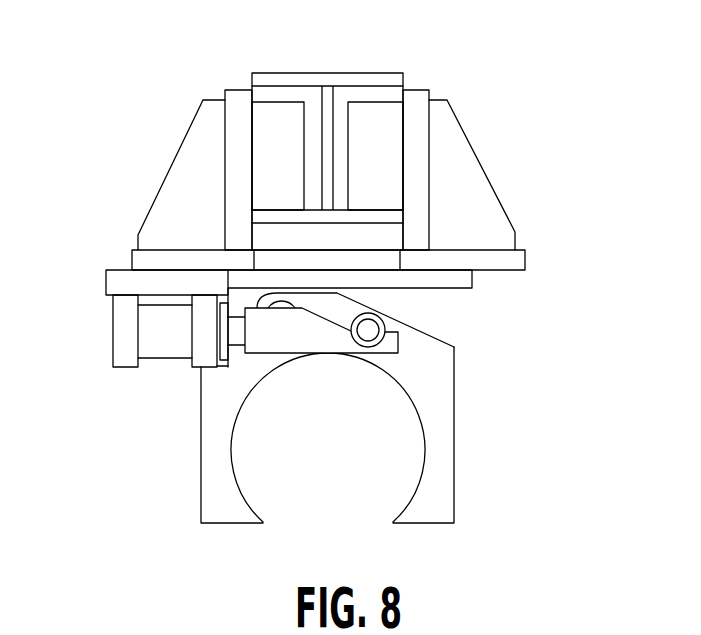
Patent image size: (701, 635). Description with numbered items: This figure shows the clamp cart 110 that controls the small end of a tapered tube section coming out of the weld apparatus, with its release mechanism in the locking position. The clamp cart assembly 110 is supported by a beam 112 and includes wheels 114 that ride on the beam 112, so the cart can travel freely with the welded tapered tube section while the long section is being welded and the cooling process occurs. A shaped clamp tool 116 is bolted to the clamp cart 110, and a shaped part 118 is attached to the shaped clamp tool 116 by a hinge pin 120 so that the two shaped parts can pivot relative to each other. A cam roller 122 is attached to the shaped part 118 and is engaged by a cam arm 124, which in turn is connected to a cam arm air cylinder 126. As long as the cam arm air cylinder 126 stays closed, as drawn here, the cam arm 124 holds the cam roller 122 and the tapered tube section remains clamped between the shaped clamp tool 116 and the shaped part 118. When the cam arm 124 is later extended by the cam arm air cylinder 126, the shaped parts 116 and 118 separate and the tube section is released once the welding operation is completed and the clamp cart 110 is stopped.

The clamp cart 110 is at (518, 125).
The beam 112 is at (357, 80).
The wheels 114 is at (270, 120).
The shaped clamp tool 116 is at (213, 413).
The shaped part 118 is at (438, 408).
The pivot pin 120 is at (368, 330).
The cam roller 122 is at (387, 322).
The cam arm 124 is at (312, 375).
The cam arm air cylinder 126 is at (162, 322).